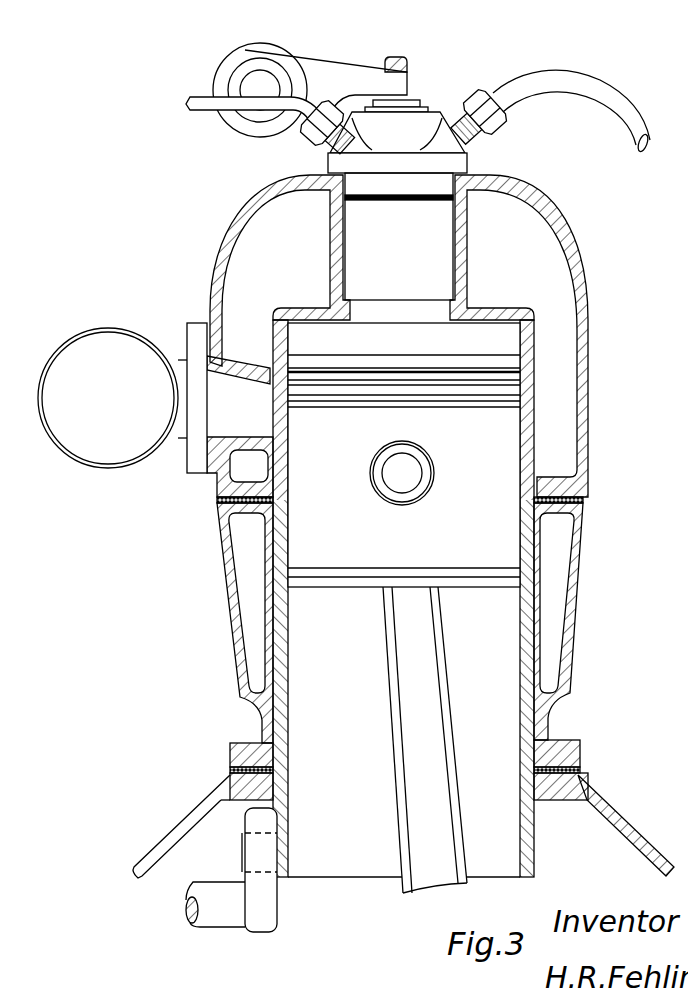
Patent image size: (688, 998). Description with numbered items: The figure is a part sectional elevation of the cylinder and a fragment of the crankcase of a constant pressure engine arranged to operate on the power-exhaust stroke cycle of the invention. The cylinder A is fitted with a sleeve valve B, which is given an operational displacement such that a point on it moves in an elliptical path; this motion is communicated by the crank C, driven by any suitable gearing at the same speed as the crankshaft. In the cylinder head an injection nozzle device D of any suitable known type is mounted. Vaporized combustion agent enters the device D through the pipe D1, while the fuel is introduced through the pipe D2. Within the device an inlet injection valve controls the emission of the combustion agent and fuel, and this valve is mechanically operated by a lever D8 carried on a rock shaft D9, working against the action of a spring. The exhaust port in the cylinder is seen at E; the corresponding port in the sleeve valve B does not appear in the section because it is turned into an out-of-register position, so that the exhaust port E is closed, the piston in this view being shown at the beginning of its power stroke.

The cylinder A is at (537, 438).
The sleeve valve B is at (543, 662).
The crank C is at (263, 917).
The injection nozzle device D is at (431, 229).
The pipe D1 is at (555, 78).
The pipe D2 is at (198, 99).
The lever D8 is at (325, 68).
The rock shaft D9 is at (258, 83).
The exhaust port E is at (233, 410).